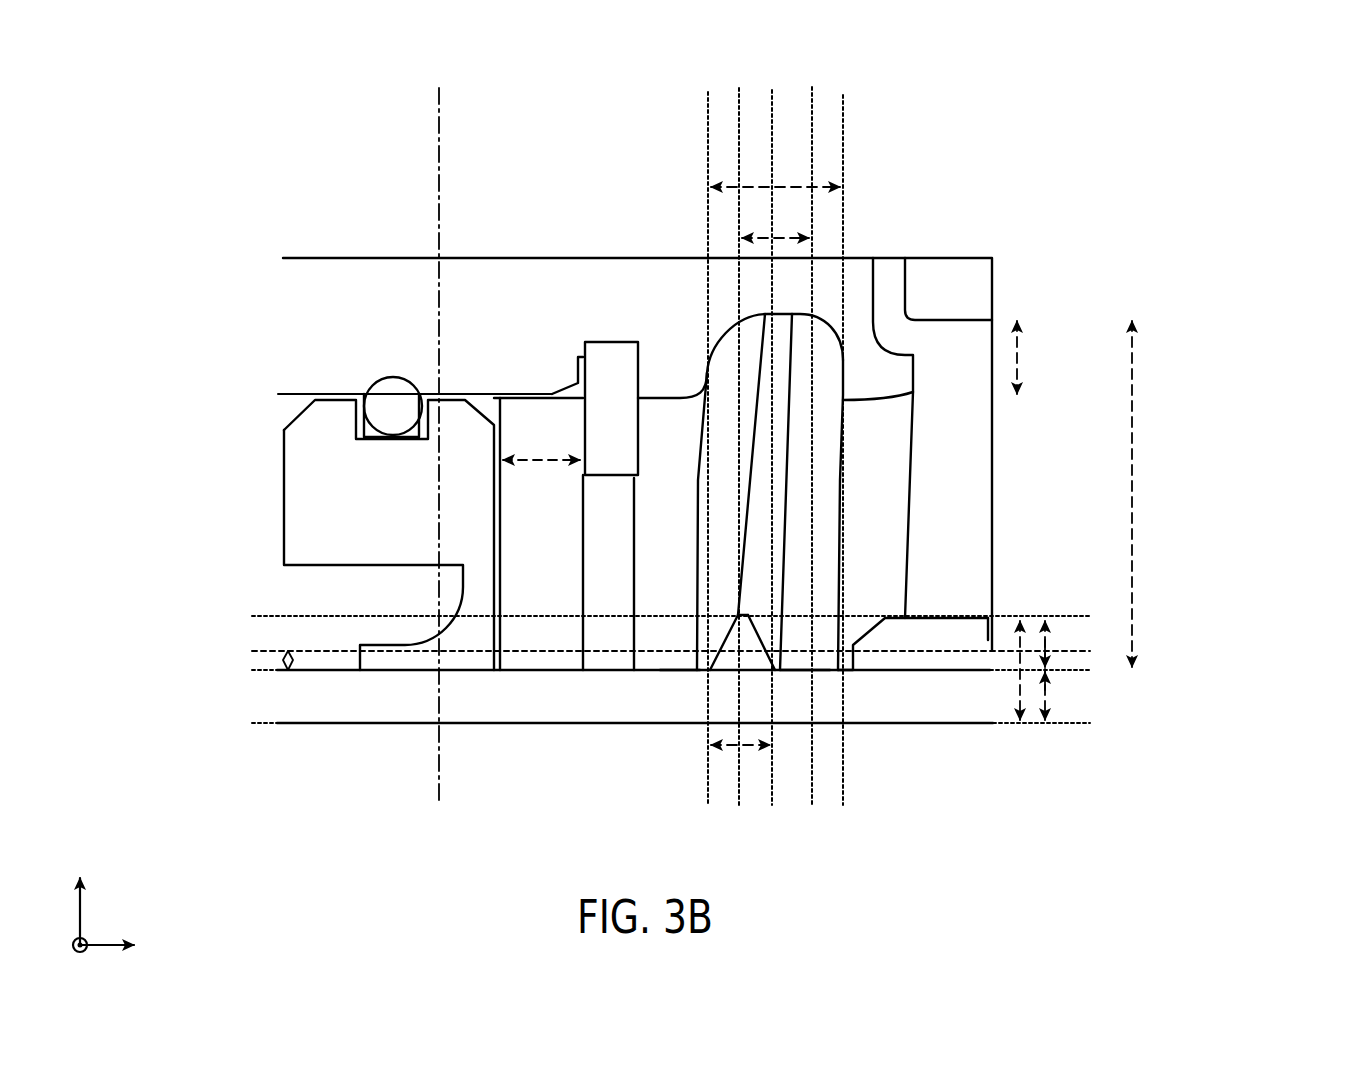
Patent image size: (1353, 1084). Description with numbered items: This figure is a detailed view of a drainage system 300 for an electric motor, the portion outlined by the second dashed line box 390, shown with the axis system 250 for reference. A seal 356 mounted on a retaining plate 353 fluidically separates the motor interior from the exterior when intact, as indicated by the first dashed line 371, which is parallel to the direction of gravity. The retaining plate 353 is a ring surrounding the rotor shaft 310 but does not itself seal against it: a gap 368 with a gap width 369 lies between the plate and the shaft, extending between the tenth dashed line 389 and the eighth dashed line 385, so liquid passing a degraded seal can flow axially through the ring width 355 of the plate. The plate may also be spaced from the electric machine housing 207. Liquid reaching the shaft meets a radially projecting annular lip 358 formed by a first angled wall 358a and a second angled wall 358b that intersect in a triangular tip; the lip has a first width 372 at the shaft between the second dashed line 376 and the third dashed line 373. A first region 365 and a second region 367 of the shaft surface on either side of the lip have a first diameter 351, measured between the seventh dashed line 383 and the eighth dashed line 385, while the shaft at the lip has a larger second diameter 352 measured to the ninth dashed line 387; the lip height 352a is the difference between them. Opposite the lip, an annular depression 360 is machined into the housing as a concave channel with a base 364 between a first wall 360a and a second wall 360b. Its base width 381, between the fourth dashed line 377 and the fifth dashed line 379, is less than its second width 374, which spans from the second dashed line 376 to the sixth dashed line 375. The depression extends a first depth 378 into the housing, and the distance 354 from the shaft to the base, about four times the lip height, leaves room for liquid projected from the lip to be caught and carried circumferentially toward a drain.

The electric machine housing 207 is at (348, 327).
The axis system 250 is at (154, 883).
The drainage system 300 is at (1247, 93).
The rotor shaft 310 is at (910, 700).
The first diameter 351 is at (1045, 723).
The second diameter 352 is at (1020, 723).
The height 352a is at (1045, 655).
The retaining plate 353 is at (523, 515).
The distance 354 is at (1132, 318).
The ring width 355 is at (503, 458).
The seal 356 is at (348, 529).
The annular lip 358 is at (768, 624).
The first angled wall 358a is at (728, 635).
The second angled wall 358b is at (762, 640).
The annular depression 360 is at (775, 473).
The first wall 360a is at (707, 378).
The second wall 360b is at (845, 385).
The base 364 is at (767, 314).
The first region 365 is at (800, 672).
The second region 367 is at (683, 672).
The gap 368 is at (535, 659).
The gap width 369 is at (283, 660).
The first dashed line 371 is at (439, 88).
The first width 372 is at (709, 745).
The third dashed line 373 is at (772, 90).
The second width 374 is at (843, 186).
The sixth dashed line 375 is at (843, 130).
The second dashed line 376 is at (708, 130).
The fourth dashed line 377 is at (739, 88).
The first depth 378 is at (1017, 400).
The fifth dashed line 379 is at (812, 87).
The base width 381 is at (812, 237).
The seventh dashed line 383 is at (262, 723).
The eighth dashed line 385 is at (260, 670).
The ninth dashed line 387 is at (252, 616).
The tenth dashed line 389 is at (262, 651).
The second dashed line box 390 is at (1014, 231).